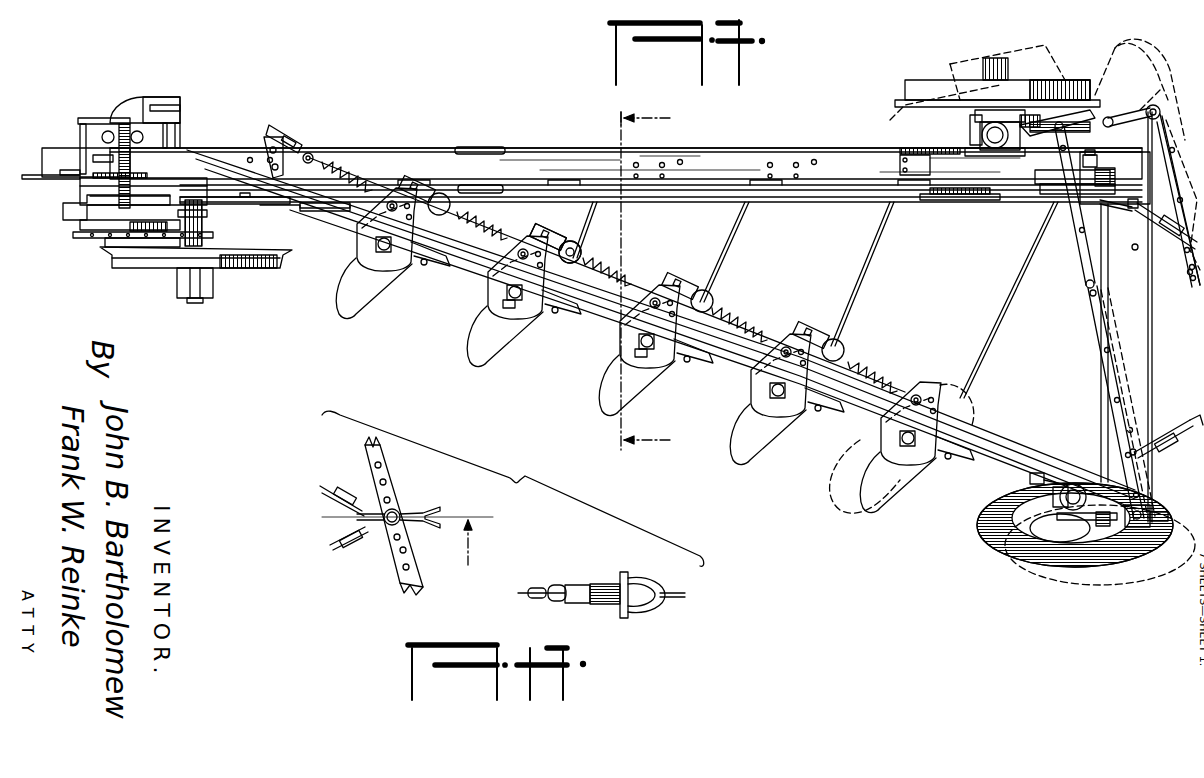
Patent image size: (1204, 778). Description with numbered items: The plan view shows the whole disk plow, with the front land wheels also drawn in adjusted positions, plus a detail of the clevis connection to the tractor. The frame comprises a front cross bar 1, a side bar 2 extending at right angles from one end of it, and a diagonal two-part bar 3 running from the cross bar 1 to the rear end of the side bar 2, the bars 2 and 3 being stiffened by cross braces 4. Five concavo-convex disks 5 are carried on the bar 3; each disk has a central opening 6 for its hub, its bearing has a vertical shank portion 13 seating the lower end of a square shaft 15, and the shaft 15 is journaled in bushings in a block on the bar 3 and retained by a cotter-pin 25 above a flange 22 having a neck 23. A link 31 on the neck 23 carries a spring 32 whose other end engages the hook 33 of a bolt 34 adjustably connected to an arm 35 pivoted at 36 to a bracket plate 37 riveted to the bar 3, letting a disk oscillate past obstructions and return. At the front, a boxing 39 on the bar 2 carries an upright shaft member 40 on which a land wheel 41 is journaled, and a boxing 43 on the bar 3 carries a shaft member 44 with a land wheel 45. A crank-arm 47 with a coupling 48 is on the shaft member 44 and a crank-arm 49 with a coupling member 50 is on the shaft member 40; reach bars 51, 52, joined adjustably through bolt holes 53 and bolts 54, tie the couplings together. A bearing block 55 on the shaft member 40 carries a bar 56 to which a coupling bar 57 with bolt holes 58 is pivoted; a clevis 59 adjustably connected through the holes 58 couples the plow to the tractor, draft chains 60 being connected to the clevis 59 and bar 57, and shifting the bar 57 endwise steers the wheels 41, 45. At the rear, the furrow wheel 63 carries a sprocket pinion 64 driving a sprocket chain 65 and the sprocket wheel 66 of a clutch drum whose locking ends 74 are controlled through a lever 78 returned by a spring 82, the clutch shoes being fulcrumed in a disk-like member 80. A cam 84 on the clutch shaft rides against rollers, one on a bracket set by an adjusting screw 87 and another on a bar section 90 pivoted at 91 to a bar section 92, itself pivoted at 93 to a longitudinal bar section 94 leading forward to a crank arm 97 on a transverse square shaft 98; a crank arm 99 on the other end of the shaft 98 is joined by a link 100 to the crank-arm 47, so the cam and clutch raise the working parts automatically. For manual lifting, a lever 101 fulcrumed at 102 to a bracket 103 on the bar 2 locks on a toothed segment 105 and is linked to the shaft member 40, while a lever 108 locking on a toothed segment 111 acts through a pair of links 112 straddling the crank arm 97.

In FIG. 1, the front cross bar 1 is at (1148, 362).
In FIG. 1, the side bar 2 is at (830, 165).
In FIG. 1, the angularly disposed bar 3 is at (985, 445).
In FIG. 1, the cross braces 4 is at (607, 213).
In FIG. 1, the concavo-convex disks 5 is at (945, 492).
In FIG. 1, the central opening 6 is at (98, 118).
In FIG. 1, the shank portion 13 is at (642, 273).
In FIG. 1, the square shaft 15 is at (645, 346).
In FIG. 1, the flange 22 is at (890, 427).
In FIG. 1, the neck 23 is at (526, 250).
In FIG. 1, the cotter-pin 25 is at (581, 332).
In FIG. 1, the link 31 is at (920, 398).
In FIG. 1, the spring 32 is at (607, 275).
In FIG. 1, the hook 33 is at (845, 348).
In FIG. 1, the bolt 34 is at (686, 290).
In FIG. 1, the arm 35 is at (570, 243).
In FIG. 1, the pivot 36 is at (550, 236).
In FIG. 1, the bracket plate 37 is at (445, 235).
In FIG. 1, the boxing 39 is at (982, 137).
In FIG. 1, the upright shaft member 40 is at (995, 145).
In FIG. 1, the land wheel 41 is at (1080, 92).
In FIG. 1, the boxing 43 is at (1032, 480).
In FIG. 1, the upright shaft member 44 is at (1076, 488).
In FIG. 1, the land wheel 45 is at (992, 540).
In FIG. 1, the crank-arm 47 is at (1067, 528).
In FIG. 1, the coupling 48 is at (1138, 528).
In FIG. 1, the crank-arm 49 is at (1040, 138).
In FIG. 1, the coupling member 50 is at (1076, 128).
In FIG. 1, the reach bar 51 is at (1082, 268).
In FIG. 1, the reach bar 52 is at (1112, 395).
In FIG. 1, the bolt holes 53 is at (1118, 360).
In FIG. 1, the bolts 54 is at (1090, 292).
In FIG. 1, the bearing block 55 is at (985, 127).
In FIG. 1, the bar 56 is at (1155, 108).
In FIG. 1, the coupling bar 57 is at (1180, 242).
In FIG. 14, the coupling bar 57 is at (372, 460).
In FIG. 1, the bolt holes 58 is at (1190, 270).
In FIG. 14, the bolt holes 58 is at (389, 468).
In FIG. 14, the clevis 59 is at (406, 512).
In FIG. 1, the draft chains 60 is at (1160, 236).
In FIG. 14, the draft chains 60 is at (340, 495).
In FIG. 1, the furrow wheel 63 is at (212, 228).
In FIG. 1, the sprocket pinion 64 is at (230, 236).
In FIG. 1, the sprocket chain 65 is at (170, 240).
In FIG. 1, the sprocket wheel 66 is at (100, 240).
In FIG. 1, the extension locking ends 74 is at (178, 240).
In FIG. 1, the lever 78 is at (40, 179).
In FIG. 1, the annular flanged disk-like member 80 is at (90, 212).
In FIG. 1, the spring 82 is at (128, 178).
In FIG. 1, the cam 84 is at (150, 195).
In FIG. 1, the adjusting screw 87 is at (86, 162).
In FIG. 1, the bar section 90 is at (190, 192).
In FIG. 1, the pivotal connection 91 is at (207, 213).
In FIG. 1, the bar section 92 is at (248, 200).
In FIG. 1, the pivotal connection 93 is at (282, 209).
In FIG. 1, the bar section 94 is at (350, 215).
In FIG. 1, the crank arm 97 is at (1128, 205).
In FIG. 1, the transversely disposed square shaft 98 is at (1100, 425).
In FIG. 1, the crank arm 99 is at (1075, 515).
In FIG. 1, the link 100 is at (1058, 505).
In FIG. 1, the lever 101 is at (745, 150).
In FIG. 1, the fulcrum 102 is at (1092, 154).
In FIG. 1, the bracket 103 is at (1102, 165).
In FIG. 1, the toothed segment 105 is at (920, 148).
In FIG. 1, the lever 108 is at (832, 196).
In FIG. 1, the toothed segment 111 is at (956, 198).
In FIG. 1, the pair of links 112 is at (1130, 182).